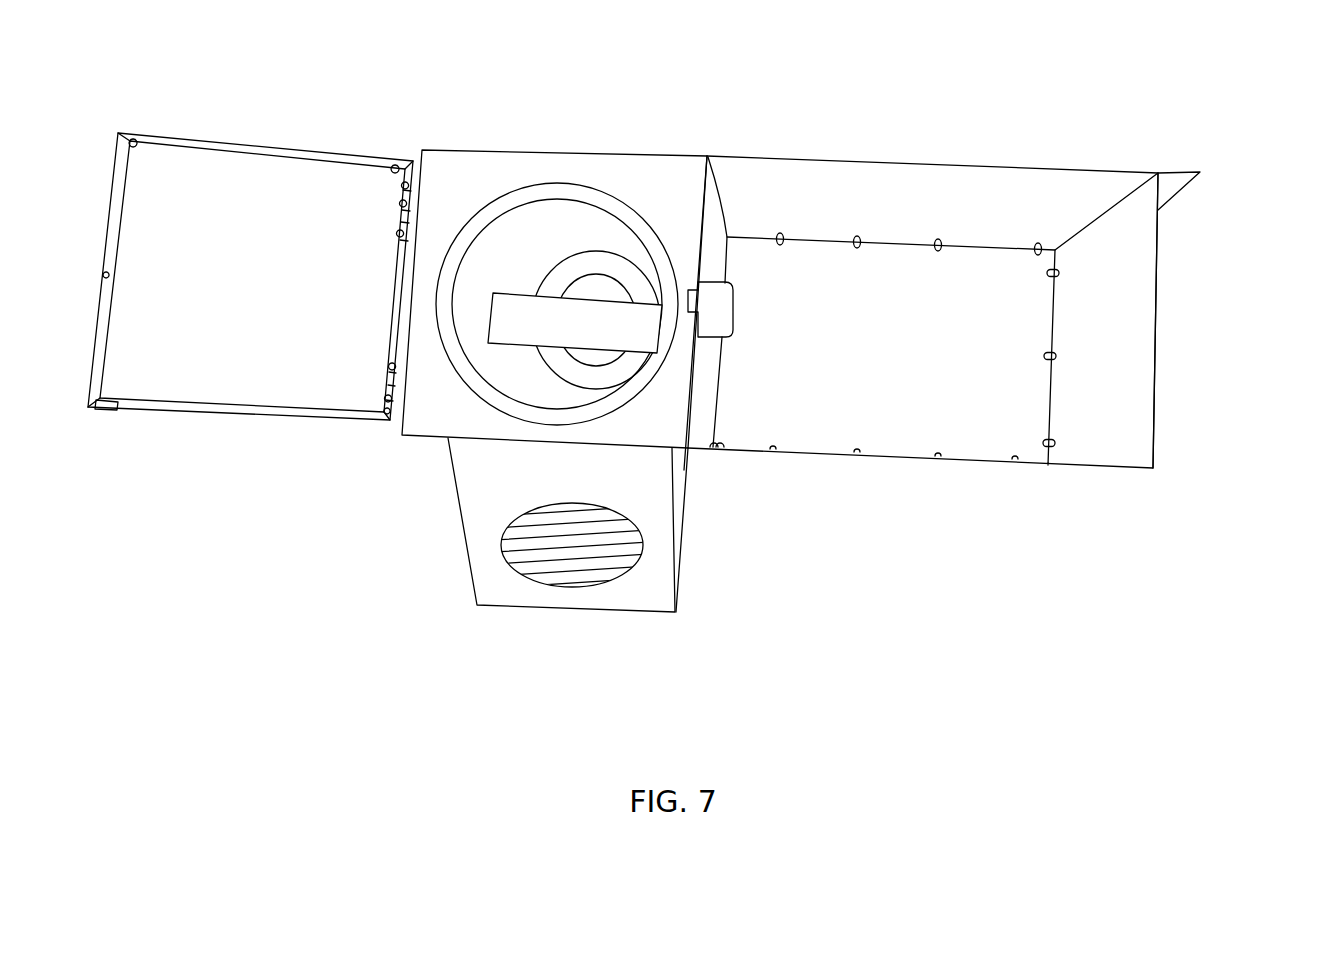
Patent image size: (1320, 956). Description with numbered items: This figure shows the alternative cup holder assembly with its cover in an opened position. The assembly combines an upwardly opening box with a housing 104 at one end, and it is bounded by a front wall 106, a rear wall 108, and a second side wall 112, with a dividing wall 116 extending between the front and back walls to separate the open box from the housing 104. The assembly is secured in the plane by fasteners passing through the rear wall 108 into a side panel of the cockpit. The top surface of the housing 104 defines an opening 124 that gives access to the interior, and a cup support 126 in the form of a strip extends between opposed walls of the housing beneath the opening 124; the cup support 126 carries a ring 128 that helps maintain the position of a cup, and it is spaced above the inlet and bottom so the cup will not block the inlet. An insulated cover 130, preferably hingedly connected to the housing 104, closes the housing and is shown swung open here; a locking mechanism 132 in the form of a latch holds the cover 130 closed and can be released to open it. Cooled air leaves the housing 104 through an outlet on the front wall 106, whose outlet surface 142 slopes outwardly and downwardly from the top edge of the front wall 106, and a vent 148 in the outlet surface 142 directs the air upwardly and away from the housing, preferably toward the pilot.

The housing 104 is at (502, 124).
The front wall 106 is at (917, 457).
The rear wall 108 is at (960, 205).
The second side wall 112 is at (1170, 268).
The dividing wall 116 is at (738, 378).
The opening 124 is at (488, 357).
The cup support 126 is at (585, 322).
The ring 128 is at (645, 290).
The insulated cover 130 is at (216, 120).
The locking mechanism 132 is at (748, 302).
The outlet surface 142 is at (568, 525).
The vent 148 is at (540, 563).